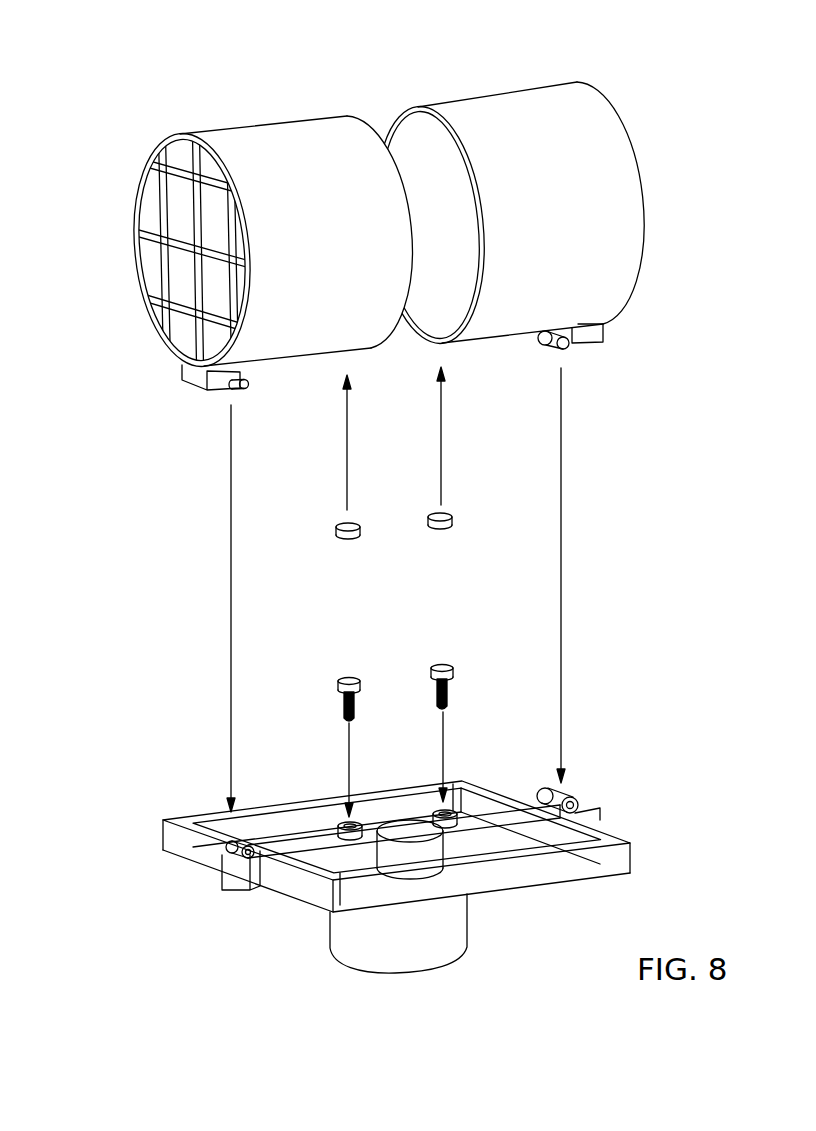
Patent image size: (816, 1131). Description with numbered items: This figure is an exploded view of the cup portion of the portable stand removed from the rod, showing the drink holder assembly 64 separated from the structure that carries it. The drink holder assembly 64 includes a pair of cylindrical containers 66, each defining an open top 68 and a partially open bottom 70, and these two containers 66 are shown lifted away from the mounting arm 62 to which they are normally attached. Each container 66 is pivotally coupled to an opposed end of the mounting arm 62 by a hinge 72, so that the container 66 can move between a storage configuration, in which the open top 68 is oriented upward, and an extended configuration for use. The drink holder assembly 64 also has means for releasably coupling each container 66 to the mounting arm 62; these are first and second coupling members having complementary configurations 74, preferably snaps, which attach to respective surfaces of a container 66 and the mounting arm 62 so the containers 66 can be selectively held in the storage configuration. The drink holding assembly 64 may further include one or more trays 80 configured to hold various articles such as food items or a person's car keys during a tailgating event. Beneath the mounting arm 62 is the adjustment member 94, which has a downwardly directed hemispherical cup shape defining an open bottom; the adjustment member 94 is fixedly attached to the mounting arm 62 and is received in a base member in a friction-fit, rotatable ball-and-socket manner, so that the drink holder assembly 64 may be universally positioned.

The mounting arm 62 is at (510, 817).
The drink holder assembly 64 is at (122, 95).
The cylindrical container 66 is at (383, 205).
The open top 68 is at (408, 124).
The partially open bottom 70 is at (173, 227).
The hinge 72 is at (215, 846).
The coupling members having complementary configurations 74 is at (438, 532).
The tray 80 is at (197, 806).
The adjustment member 94 is at (457, 933).